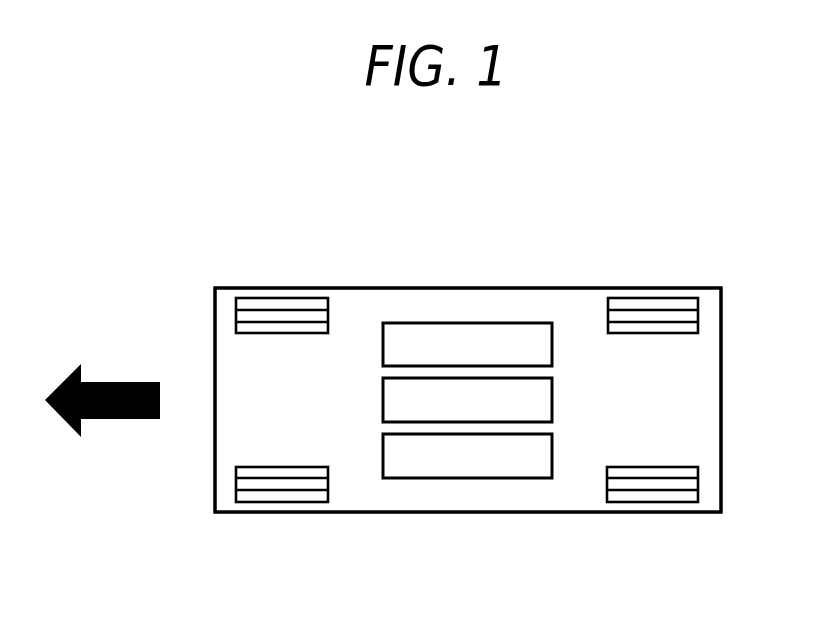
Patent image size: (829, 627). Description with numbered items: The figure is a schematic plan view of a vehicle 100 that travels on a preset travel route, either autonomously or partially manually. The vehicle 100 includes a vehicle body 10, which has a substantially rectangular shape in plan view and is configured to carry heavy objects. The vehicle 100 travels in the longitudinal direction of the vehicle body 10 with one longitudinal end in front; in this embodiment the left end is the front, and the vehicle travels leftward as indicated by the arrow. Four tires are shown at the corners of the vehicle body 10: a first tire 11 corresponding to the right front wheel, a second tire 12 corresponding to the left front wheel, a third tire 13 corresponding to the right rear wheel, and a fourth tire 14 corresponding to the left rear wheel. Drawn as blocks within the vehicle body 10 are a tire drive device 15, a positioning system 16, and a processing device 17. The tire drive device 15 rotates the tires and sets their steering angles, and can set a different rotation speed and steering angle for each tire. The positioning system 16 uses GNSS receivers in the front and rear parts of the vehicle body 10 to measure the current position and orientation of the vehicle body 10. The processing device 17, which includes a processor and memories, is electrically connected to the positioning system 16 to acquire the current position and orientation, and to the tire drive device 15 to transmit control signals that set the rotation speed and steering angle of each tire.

The vehicle 100 is at (567, 258).
The vehicle body 10 is at (470, 300).
The first tire 11 is at (285, 305).
The second tire 12 is at (280, 493).
The third tire 13 is at (660, 306).
The fourth tire 14 is at (655, 494).
The tire drive device 15 is at (552, 354).
The positioning system 16 is at (552, 400).
The processing device 17 is at (552, 447).